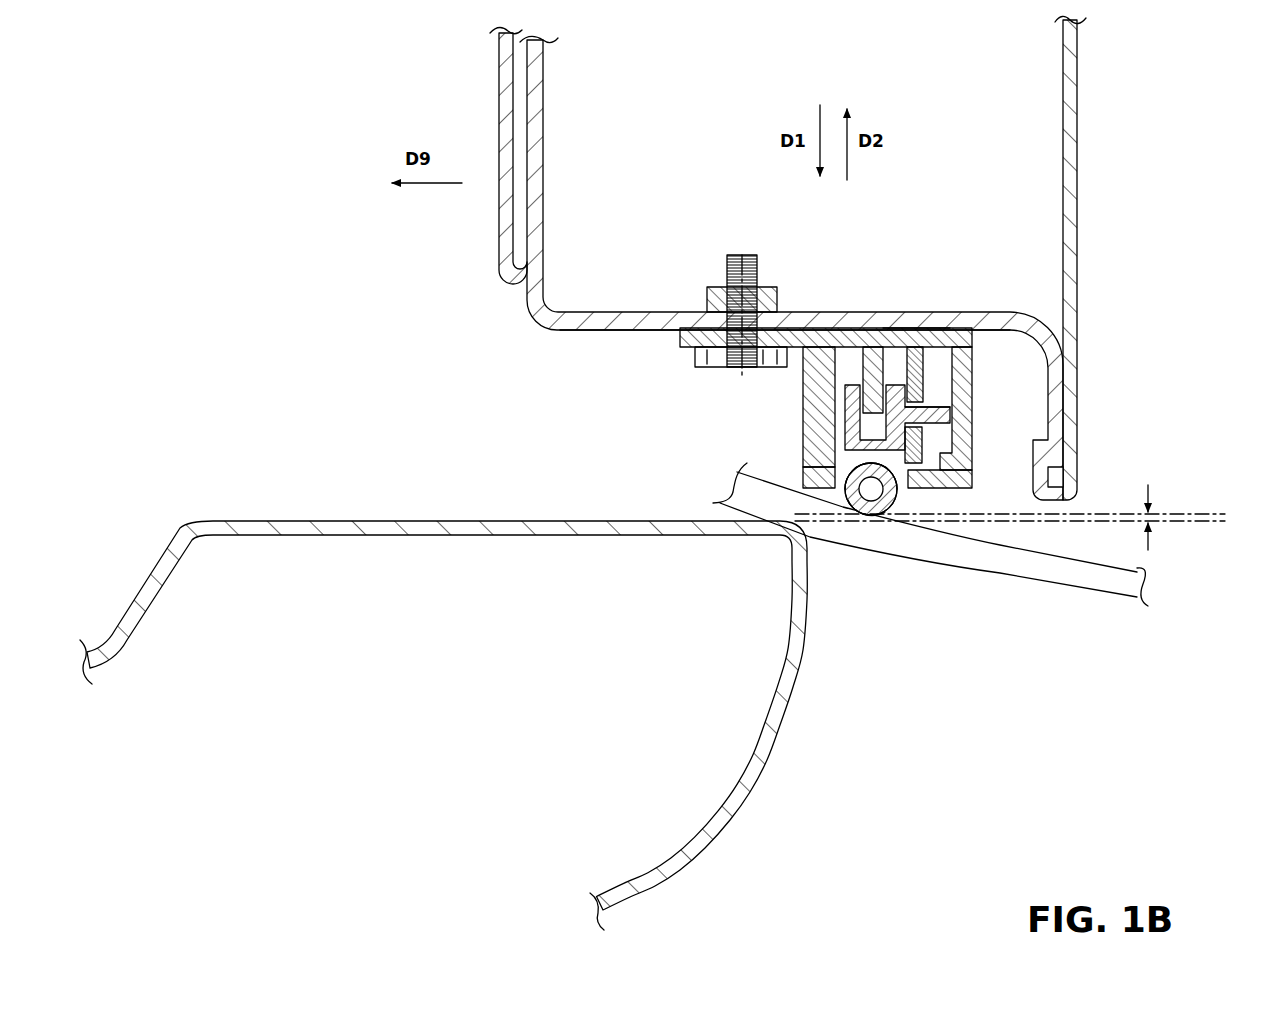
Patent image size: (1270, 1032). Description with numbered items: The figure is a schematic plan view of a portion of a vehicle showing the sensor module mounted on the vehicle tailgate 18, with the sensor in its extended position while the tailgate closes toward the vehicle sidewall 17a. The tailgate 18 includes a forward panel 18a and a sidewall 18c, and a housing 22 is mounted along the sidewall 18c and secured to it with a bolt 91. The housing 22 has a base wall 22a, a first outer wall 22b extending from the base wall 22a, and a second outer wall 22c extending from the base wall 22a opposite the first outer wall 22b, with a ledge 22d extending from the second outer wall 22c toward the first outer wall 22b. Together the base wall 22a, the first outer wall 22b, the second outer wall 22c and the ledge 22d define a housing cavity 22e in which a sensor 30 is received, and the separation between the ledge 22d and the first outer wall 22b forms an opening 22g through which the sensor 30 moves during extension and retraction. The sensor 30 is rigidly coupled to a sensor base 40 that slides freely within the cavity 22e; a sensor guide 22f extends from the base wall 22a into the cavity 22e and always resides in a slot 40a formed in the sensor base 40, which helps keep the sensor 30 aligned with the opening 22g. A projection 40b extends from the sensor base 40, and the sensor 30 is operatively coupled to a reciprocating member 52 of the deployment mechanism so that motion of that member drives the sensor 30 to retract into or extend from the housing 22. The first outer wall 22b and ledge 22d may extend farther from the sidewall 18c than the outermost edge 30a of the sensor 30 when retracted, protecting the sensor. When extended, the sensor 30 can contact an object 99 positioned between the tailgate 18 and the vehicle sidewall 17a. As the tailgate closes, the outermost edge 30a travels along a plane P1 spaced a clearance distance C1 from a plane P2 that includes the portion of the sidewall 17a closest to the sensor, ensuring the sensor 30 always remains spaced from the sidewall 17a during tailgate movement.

The vehicle tailgate 18 is at (1100, 82).
The forward panel 18a is at (536, 94).
The sidewall 18c is at (638, 323).
The vehicle sidewall 17a is at (530, 520).
The bolt 91 is at (737, 253).
The housing 22 is at (823, 340).
The base wall 22a is at (915, 345).
The first outer wall 22b is at (803, 442).
The second outer wall 22c is at (985, 342).
The ledge 22d is at (952, 488).
The housing cavity 22e is at (842, 466).
The sensor guide 22f is at (880, 358).
The opening 22g is at (841, 490).
The reciprocating member 52 is at (930, 345).
The sensor base 40 is at (915, 420).
The slot 40a is at (940, 421).
The projection 40b is at (940, 405).
The sensor 30 is at (930, 445).
The outermost edge 30a is at (902, 519).
The object 99 is at (1033, 577).
The plane P1 is at (1190, 514).
The plane P2 is at (1190, 521).
The clearance distance C1 is at (1146, 510).